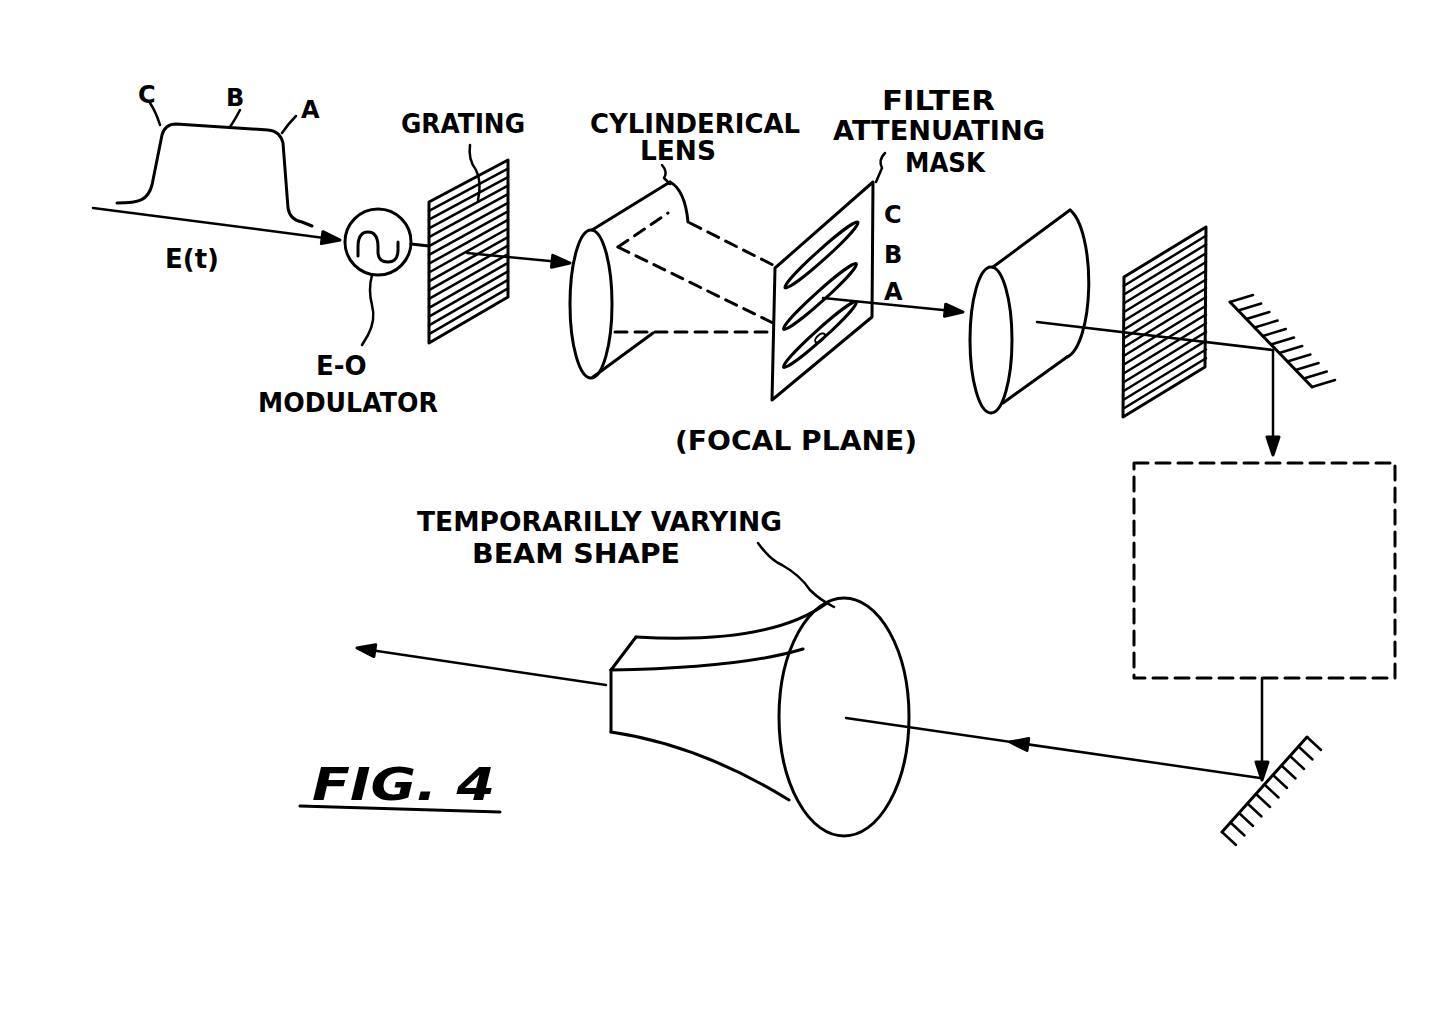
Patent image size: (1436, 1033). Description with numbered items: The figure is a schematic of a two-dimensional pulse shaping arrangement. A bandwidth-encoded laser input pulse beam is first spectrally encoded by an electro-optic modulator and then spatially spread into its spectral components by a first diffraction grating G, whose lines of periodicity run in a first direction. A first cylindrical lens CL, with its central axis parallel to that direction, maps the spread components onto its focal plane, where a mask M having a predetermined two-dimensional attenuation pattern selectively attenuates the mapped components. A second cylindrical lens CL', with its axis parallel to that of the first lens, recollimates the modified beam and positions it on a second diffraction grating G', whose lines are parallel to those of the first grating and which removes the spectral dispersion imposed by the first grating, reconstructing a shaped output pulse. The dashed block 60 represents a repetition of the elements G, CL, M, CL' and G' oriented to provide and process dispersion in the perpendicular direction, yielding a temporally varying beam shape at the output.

The block 60 is at (1133, 567).
The first diffraction grating G is at (468, 257).
The first cylindrical lens CL is at (629, 285).
The mask M is at (827, 347).
The second cylindrical lens CL' is at (1029, 319).
The second diffraction grating G' is at (1171, 326).